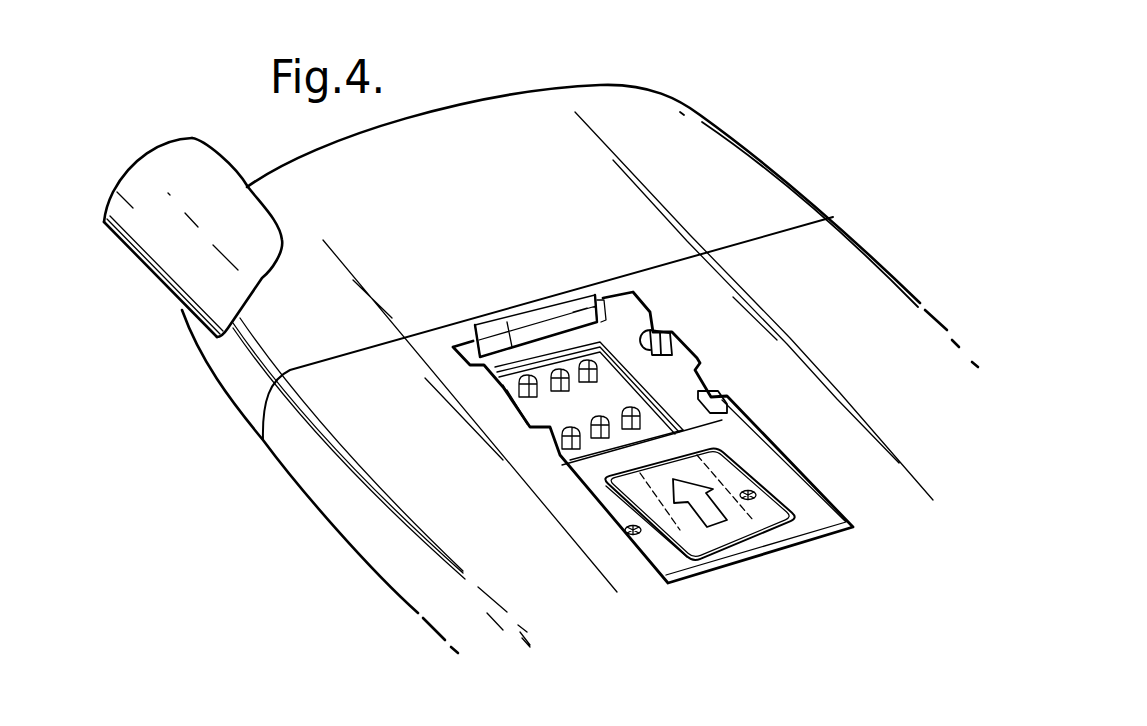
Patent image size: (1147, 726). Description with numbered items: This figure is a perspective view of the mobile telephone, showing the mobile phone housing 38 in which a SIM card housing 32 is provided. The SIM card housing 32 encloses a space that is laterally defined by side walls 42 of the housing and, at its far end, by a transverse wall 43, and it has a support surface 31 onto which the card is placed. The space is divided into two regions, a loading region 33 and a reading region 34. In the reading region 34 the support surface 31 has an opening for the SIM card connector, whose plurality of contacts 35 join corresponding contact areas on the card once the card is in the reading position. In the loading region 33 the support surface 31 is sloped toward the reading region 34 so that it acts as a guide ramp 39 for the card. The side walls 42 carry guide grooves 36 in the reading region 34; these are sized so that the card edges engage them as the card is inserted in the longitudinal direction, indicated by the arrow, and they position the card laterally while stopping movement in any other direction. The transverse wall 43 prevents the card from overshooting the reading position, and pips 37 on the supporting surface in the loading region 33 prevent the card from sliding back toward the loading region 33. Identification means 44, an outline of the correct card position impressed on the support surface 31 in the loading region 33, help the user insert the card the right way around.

The support surface 31 is at (620, 501).
The SIM card housing 32 is at (738, 387).
The loading region 33 is at (745, 430).
The reading region 34 is at (607, 397).
The contacts 35 is at (522, 378).
The guide grooves 36 is at (640, 320).
The pips 37 is at (625, 528).
The mobile phone housing 38 is at (733, 172).
The guide ramp 39 is at (773, 447).
The side walls 42 is at (697, 367).
The transverse wall 43 is at (556, 318).
The identification means 44 is at (770, 530).